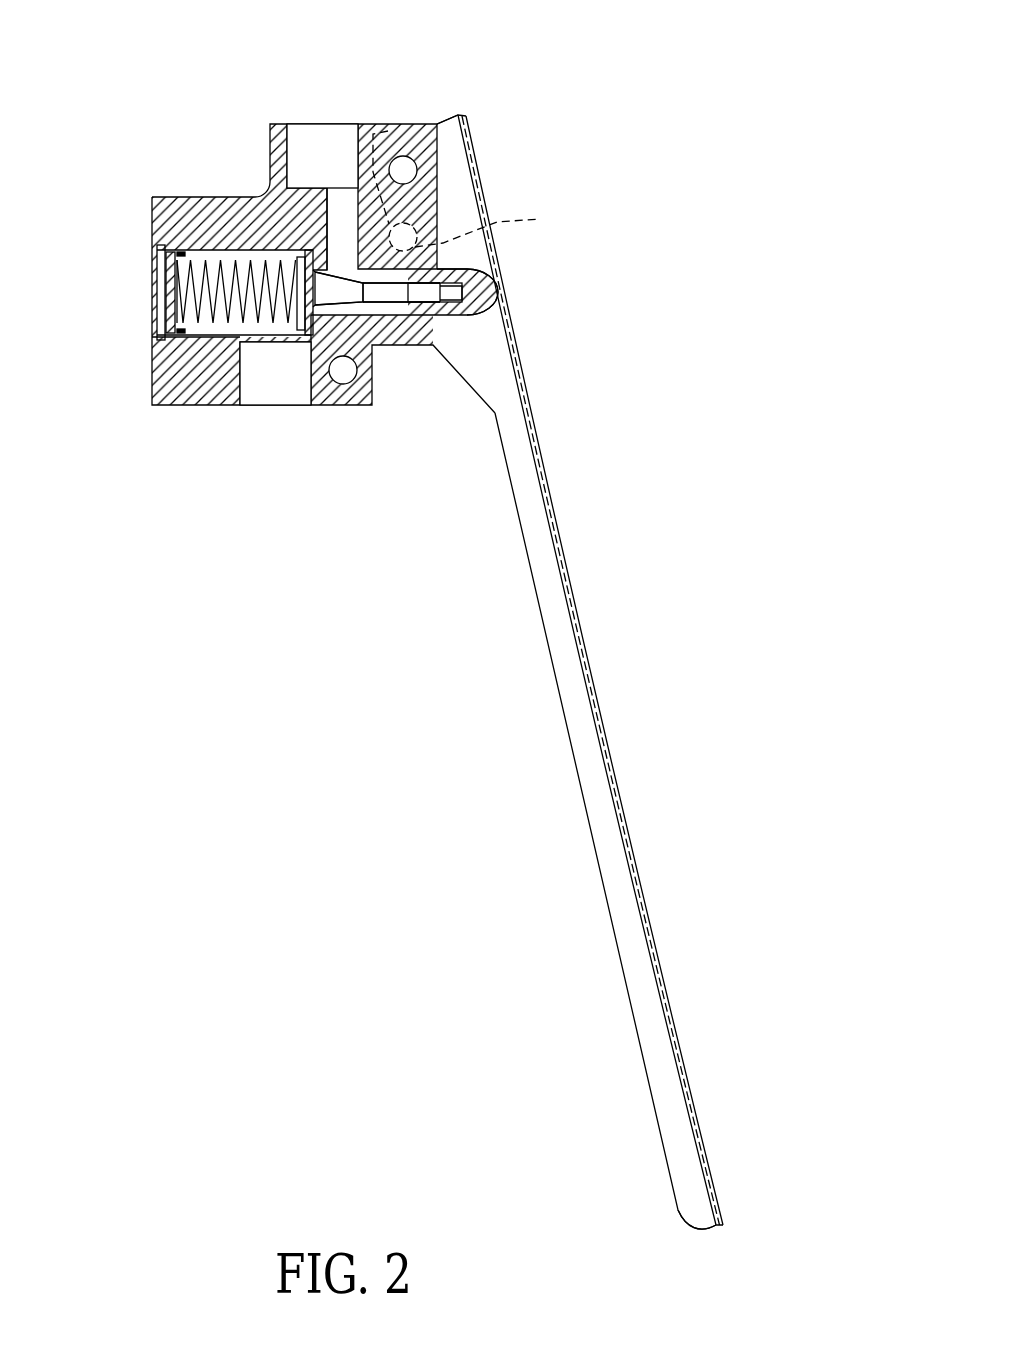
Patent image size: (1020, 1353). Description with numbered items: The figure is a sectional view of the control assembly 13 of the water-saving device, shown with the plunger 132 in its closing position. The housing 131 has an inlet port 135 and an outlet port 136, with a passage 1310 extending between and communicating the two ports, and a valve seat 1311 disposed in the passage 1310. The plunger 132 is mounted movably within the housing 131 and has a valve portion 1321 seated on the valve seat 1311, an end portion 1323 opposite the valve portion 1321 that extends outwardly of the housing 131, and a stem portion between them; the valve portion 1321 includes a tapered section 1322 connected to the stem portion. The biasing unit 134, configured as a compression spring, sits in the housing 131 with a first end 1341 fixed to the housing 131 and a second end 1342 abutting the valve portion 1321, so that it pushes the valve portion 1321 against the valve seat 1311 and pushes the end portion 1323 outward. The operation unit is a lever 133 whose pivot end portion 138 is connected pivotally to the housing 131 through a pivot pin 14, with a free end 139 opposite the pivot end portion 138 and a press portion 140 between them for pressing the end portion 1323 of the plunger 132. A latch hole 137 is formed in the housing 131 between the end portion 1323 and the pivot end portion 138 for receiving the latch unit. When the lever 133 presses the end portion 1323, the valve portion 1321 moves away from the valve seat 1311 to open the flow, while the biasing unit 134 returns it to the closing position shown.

The control assembly 13 is at (500, 107).
The housing 131 is at (152, 397).
The valve seat 1311 is at (310, 263).
The plunger 132 is at (288, 258).
The valve portion 1321 is at (398, 314).
The tapered section 1322 is at (335, 313).
The end portion 1323 is at (478, 306).
The lever 133 is at (558, 500).
The biasing unit 134 is at (172, 273).
The first end 1341 is at (185, 312).
The inlet port 135 is at (257, 406).
The second end 1342 is at (302, 392).
The outlet port 136 is at (327, 124).
The latch hole 137 is at (480, 191).
The pivot end portion 138 is at (462, 172).
The free end 139 is at (668, 1089).
The press portion 140 is at (498, 283).
The passage 1310 is at (420, 314).
The pivot pin 14 is at (400, 157).